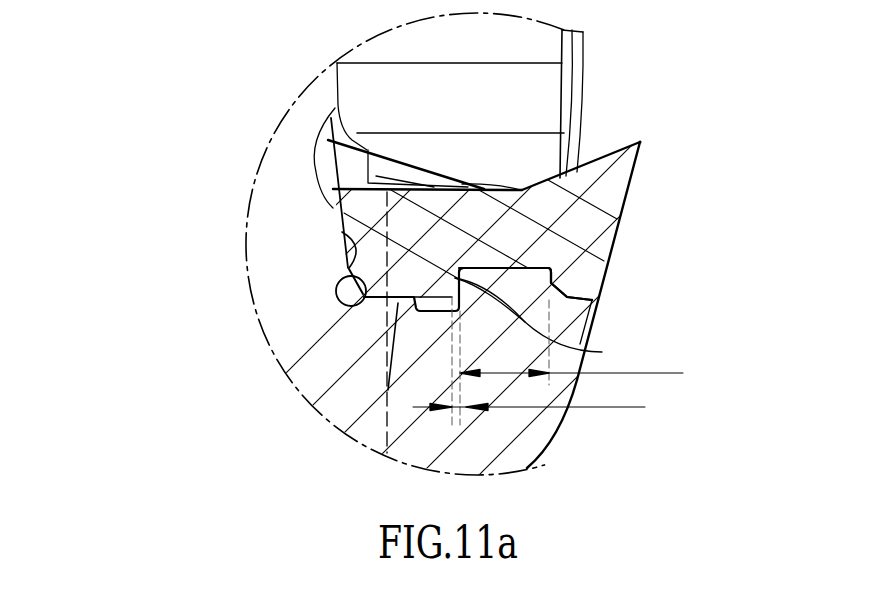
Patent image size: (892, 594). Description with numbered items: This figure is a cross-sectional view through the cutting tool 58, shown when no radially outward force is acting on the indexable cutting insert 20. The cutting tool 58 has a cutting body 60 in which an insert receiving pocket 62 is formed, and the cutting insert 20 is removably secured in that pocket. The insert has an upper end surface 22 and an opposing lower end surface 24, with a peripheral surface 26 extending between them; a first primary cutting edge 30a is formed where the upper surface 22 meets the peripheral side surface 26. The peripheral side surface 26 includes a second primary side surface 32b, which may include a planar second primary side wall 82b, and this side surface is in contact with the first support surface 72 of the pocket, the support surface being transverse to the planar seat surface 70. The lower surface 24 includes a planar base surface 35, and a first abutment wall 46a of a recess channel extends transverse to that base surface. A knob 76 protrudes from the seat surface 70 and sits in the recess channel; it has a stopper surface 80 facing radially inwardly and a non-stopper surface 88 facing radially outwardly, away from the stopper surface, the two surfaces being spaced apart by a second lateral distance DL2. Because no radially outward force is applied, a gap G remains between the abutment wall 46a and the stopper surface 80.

The indexable cutting insert 20 is at (602, 201).
The upper end surface 22 is at (341, 138).
The lower end surface 24 is at (376, 306).
The peripheral surface 26 is at (316, 209).
The first primary cutting edge 30a is at (640, 142).
The second primary side surface 32b is at (316, 223).
The planar base surface 35 is at (614, 313).
The first abutment wall 46a is at (592, 352).
The cutting tool 58 is at (248, 132).
The cutting body 60 is at (337, 412).
The insert receiving pocket 62 is at (547, 146).
The planar seat surface 70 is at (612, 292).
The first support surface 72 is at (348, 270).
The knob 76 is at (537, 264).
The stopper surface 80 is at (439, 254).
The second primary side wall 82b is at (338, 226).
The non-stopper surface 88 is at (612, 292).
The second lateral distance DL2 is at (595, 347).
The gap G is at (542, 362).